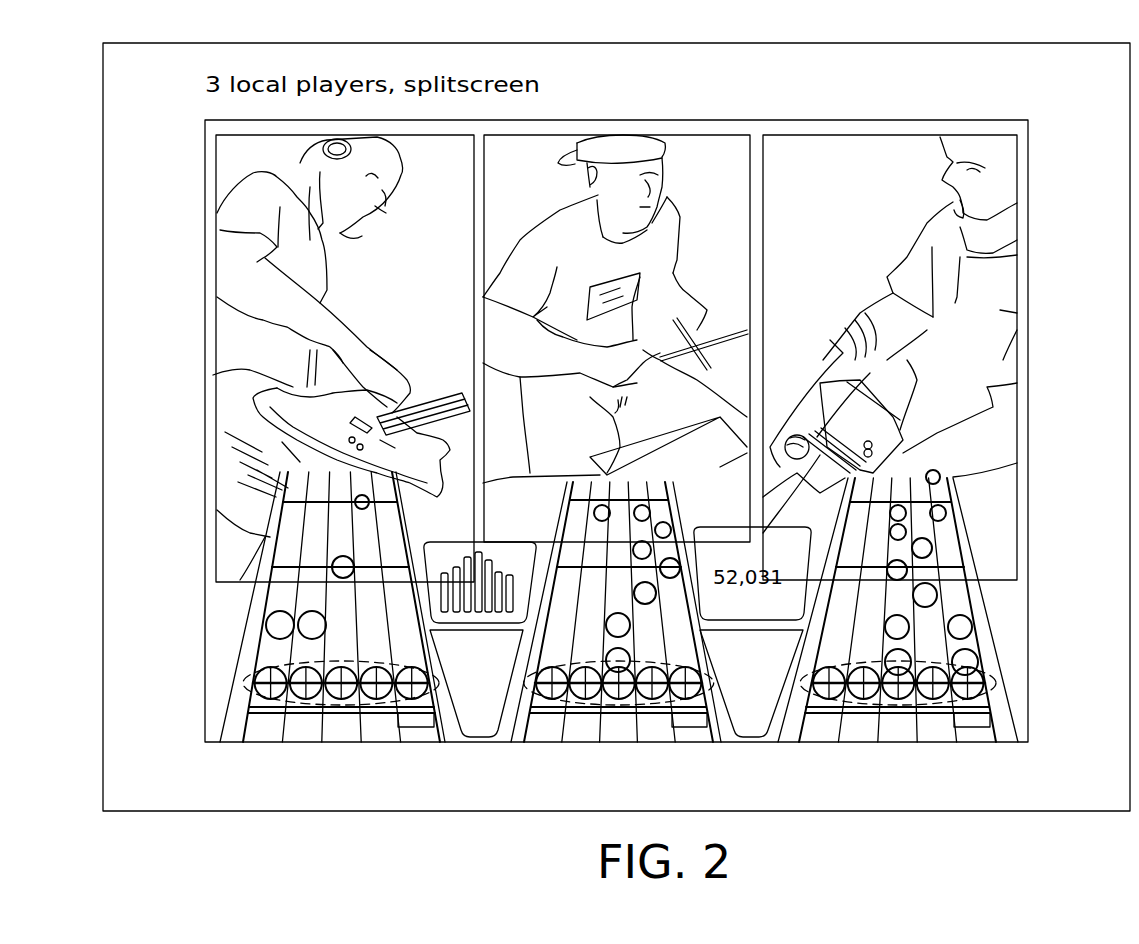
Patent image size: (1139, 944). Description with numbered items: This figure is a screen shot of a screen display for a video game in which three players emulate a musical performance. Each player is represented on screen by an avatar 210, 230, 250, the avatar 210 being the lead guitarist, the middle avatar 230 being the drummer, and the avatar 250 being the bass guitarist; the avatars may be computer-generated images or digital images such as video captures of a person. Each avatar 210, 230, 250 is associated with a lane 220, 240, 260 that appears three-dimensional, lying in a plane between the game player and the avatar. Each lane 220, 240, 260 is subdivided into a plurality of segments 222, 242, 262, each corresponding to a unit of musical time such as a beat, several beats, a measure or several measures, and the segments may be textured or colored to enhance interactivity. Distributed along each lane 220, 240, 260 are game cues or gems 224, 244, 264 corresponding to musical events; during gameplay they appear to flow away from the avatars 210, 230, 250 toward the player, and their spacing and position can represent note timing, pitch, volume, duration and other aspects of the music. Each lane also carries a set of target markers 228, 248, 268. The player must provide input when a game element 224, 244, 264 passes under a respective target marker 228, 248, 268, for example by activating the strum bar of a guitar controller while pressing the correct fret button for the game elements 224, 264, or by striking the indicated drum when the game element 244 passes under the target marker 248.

The avatar 210 is at (101, 330).
The lane 220 is at (250, 636).
The segment 222 is at (258, 537).
The game element 224 is at (330, 633).
The target marker 228 is at (313, 708).
The avatar 230 is at (622, 126).
The lane 240 is at (722, 735).
The segment 242 is at (553, 536).
The game element 244 is at (640, 630).
The target marker 248 is at (583, 708).
The avatar 250 is at (1003, 312).
The lane 260 is at (1003, 699).
The segment 262 is at (973, 535).
The game element 264 is at (975, 621).
The target marker 268 is at (868, 708).